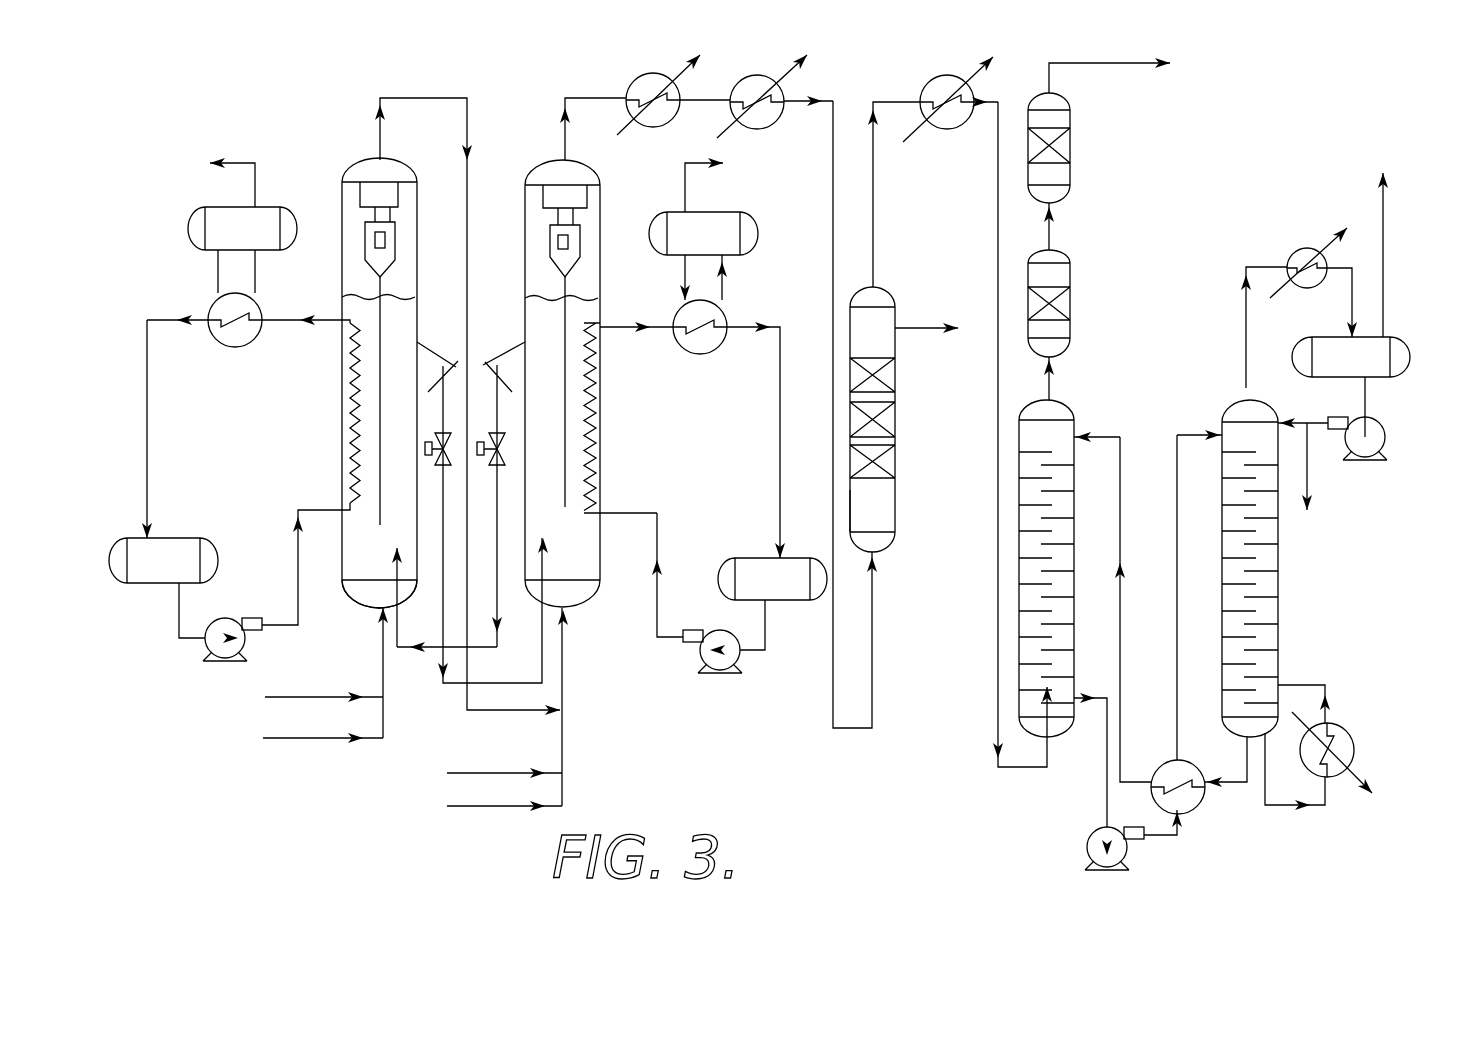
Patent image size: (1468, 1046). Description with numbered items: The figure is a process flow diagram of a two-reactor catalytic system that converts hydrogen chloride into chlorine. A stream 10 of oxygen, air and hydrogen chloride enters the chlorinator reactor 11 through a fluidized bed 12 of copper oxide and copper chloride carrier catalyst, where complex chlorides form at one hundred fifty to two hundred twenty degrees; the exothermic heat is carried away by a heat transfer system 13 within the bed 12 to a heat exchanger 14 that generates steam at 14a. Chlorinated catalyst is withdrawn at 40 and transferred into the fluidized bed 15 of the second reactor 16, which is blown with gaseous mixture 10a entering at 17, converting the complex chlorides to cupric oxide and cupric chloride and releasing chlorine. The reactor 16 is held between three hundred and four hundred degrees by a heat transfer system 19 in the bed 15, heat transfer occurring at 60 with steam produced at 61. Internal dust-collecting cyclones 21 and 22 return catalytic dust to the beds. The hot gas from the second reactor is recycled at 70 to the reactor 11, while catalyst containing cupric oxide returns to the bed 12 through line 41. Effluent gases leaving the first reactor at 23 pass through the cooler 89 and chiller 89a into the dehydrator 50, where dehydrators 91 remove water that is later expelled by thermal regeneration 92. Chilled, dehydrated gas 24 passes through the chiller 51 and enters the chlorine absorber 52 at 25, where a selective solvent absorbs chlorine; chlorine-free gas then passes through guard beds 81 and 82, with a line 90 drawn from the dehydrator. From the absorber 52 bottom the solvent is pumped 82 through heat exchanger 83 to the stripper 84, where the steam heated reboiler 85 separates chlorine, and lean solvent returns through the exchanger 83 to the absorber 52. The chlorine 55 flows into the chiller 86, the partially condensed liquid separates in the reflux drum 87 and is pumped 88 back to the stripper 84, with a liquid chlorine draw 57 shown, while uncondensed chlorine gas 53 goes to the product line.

The stream of oxygen, air and hydrogen chloride 10 is at (563, 728).
The stream of oxygen, air and hydrogen chloride 10a is at (383, 660).
The chlorinator reactor 11 is at (607, 480).
The fluidized bed 12 is at (555, 452).
The system of heat transfer 13 is at (597, 387).
The heat exchanger 14 is at (717, 354).
The steam 14a is at (688, 187).
The fluidized bed 15 is at (403, 480).
The second reactor 16 is at (340, 467).
The reactor inlet 17 is at (353, 560).
The system of heat transfer 19 is at (353, 418).
The internal dust-collecting cyclone 21 is at (396, 238).
The internal dust-collecting cyclone 22 is at (580, 238).
The effluent gas outlet 23 is at (563, 143).
The chilled, dehydrated gas 24 is at (875, 210).
The absorber inlet 25 is at (997, 683).
The catalyst withdrawal line 40 is at (503, 330).
The catalyst return line 41 is at (447, 613).
The recovery system (dehydrator) 50 is at (903, 293).
The chiller 51 is at (943, 129).
The chlorine absorber 52 is at (1073, 420).
The chlorine product gas 53 is at (1383, 257).
The chlorine 55 is at (1243, 312).
The product line 57 is at (1308, 467).
The heat transfer (heat exchanger) 60 is at (228, 347).
The steam 61 is at (257, 166).
The recycle 70 is at (412, 97).
The guard bed 81 is at (1072, 270).
The guard bed / pump 82 is at (1072, 118).
The heat exchanger 83 is at (1196, 808).
The stripper 84 is at (1238, 400).
The steam heated reboiler 85 is at (1348, 736).
The chiller 86 is at (1300, 248).
The reflux drum 87 is at (1351, 387).
The pump 88 is at (1385, 440).
The cooler 89 is at (632, 87).
The chiller 89a is at (783, 90).
The line 90 is at (917, 328).
The dehydrators 91 is at (895, 370).
The thermal regeneration system 92 is at (880, 508).